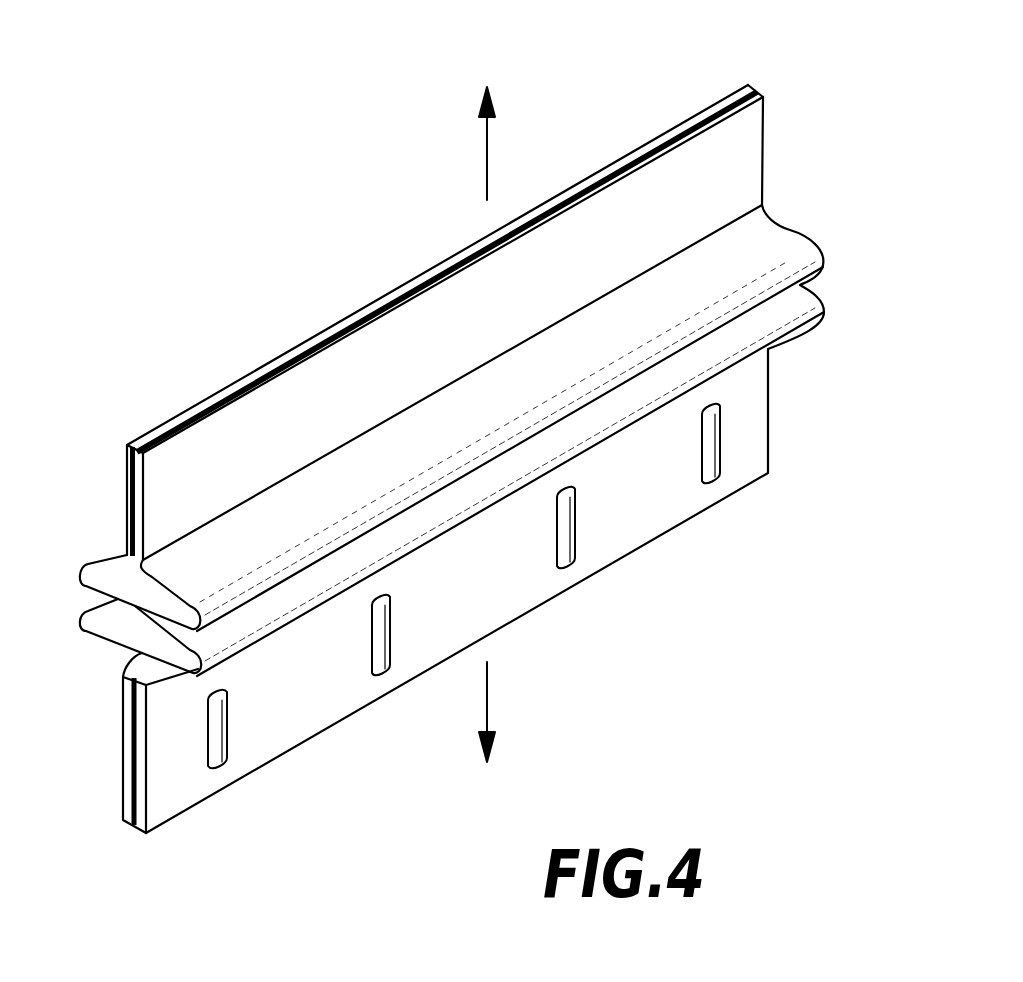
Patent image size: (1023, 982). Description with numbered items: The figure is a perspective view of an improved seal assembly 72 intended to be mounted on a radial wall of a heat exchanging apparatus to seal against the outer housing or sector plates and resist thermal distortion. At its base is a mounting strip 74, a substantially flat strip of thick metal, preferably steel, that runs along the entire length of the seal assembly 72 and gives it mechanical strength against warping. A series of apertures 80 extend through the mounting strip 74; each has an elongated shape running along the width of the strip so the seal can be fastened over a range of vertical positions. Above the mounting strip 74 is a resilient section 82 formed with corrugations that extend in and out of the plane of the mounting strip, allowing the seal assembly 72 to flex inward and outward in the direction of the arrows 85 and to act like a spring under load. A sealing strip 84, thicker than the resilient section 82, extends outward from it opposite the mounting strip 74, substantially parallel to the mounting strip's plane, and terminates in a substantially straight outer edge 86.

The seal assembly 72 is at (900, 130).
The mounting strip 74 is at (752, 442).
The apertures 80 is at (228, 763).
The resilient section 82 is at (768, 248).
The sealing strip 84 is at (745, 158).
The arrows 85 is at (487, 157).
The outer edge 86 is at (340, 327).